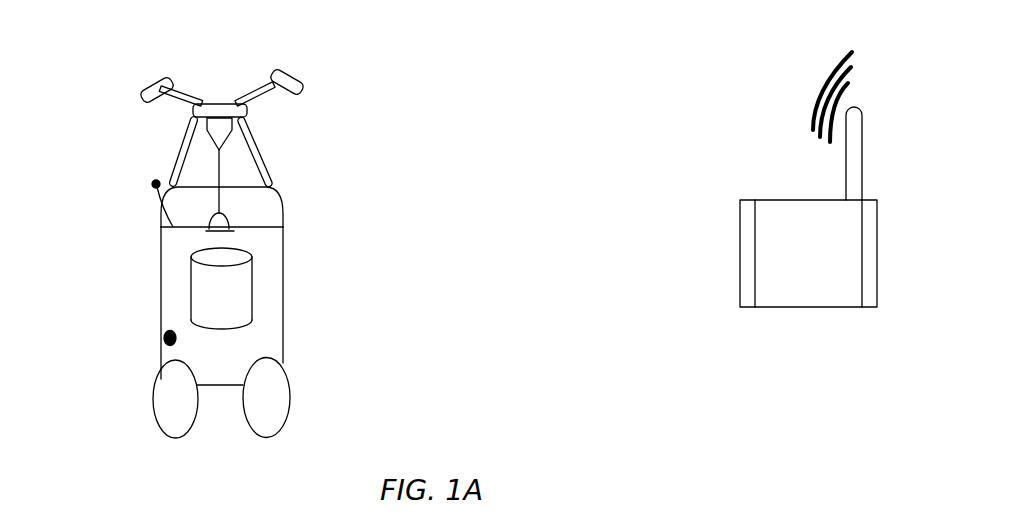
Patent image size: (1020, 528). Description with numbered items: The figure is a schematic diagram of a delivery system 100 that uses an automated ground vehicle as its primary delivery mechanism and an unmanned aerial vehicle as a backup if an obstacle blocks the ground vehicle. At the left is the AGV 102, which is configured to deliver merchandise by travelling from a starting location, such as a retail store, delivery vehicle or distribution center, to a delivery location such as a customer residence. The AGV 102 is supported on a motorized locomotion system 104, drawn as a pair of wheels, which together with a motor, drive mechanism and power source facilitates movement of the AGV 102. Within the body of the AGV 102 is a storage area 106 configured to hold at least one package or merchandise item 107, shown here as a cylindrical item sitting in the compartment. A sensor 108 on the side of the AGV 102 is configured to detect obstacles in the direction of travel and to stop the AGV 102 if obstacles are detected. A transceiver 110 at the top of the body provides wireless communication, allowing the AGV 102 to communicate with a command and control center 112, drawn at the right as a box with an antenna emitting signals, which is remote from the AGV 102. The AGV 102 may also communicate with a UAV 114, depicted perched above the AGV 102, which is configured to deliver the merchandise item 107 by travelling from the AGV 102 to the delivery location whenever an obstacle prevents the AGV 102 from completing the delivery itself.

The delivery system 100 is at (544, 72).
The AGV 102 is at (283, 268).
The motorized locomotion system 104 is at (290, 384).
The storage area 106 is at (260, 288).
The merchandise item 107 is at (191, 282).
The sensor 108 is at (165, 340).
The transceiver 110 is at (140, 183).
The command and control center 112 is at (749, 332).
The UAV 114 is at (173, 150).